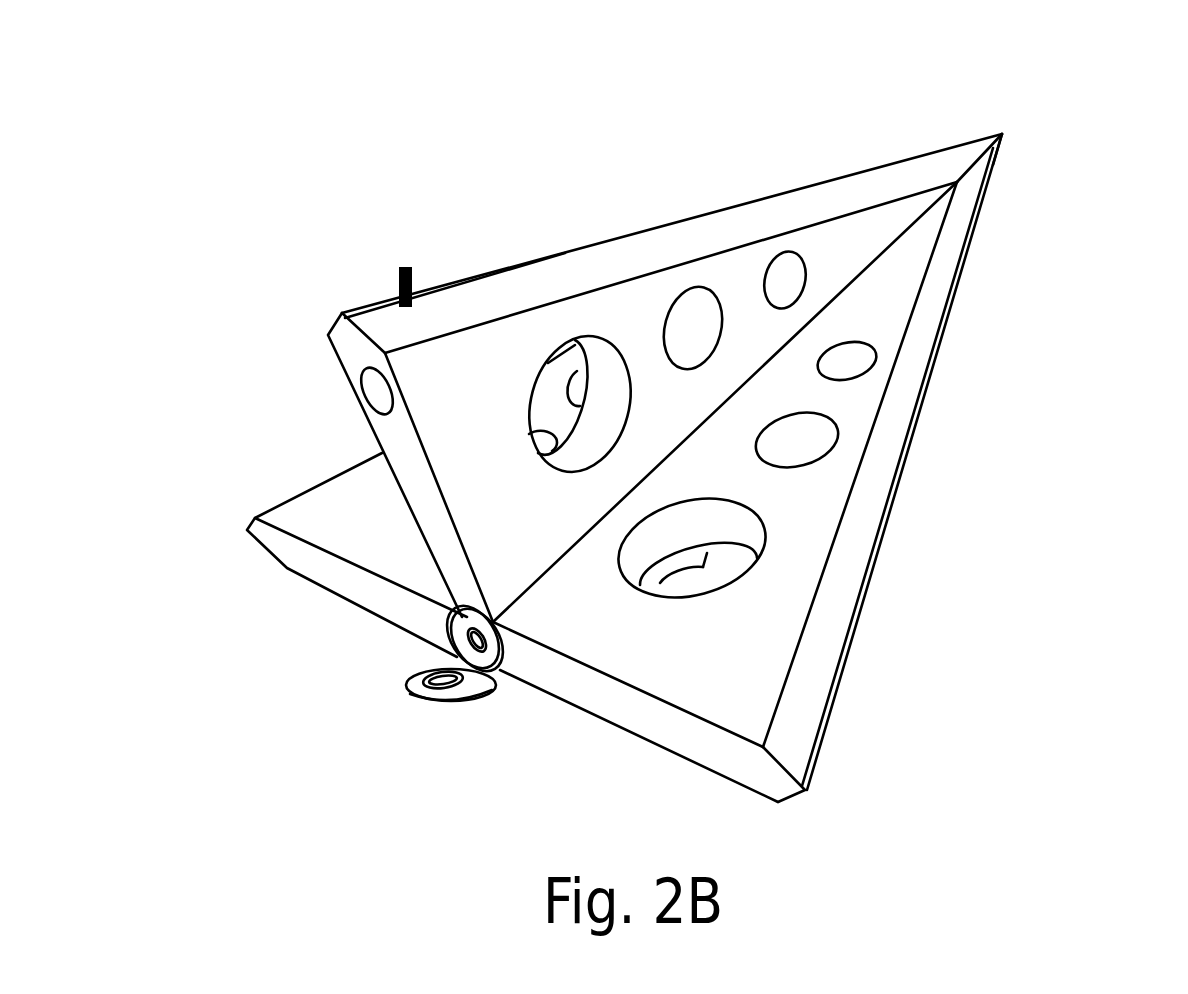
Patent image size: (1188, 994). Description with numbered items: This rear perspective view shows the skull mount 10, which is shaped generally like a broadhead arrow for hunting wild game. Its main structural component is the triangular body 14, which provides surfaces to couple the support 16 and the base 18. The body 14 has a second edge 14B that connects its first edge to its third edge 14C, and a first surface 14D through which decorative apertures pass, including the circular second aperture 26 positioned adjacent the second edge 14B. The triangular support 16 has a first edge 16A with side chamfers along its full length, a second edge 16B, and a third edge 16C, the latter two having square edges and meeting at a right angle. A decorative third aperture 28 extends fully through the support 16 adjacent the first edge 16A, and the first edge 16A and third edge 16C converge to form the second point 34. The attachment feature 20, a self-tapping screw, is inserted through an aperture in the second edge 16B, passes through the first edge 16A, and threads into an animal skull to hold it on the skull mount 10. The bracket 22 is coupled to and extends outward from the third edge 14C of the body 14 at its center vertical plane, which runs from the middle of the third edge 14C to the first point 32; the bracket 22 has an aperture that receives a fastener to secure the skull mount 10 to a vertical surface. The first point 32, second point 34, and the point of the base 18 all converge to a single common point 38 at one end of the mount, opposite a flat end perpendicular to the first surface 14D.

The skull mount 10 is at (676, 128).
The body 14 is at (754, 724).
The second edge 14B is at (890, 526).
The third edge 14C is at (713, 749).
The first surface 14D is at (757, 634).
The support 16 is at (470, 478).
The first edge 16A is at (496, 272).
The second edge 16B is at (437, 553).
The third edge 16C is at (538, 578).
The base 18 is at (679, 565).
The attachment feature 20 is at (398, 287).
The bracket 22 is at (406, 688).
The second aperture 26 is at (813, 432).
The third aperture 28 is at (676, 309).
The first point 32 is at (999, 130).
The second point 34 is at (950, 150).
The common point 38 is at (1008, 148).